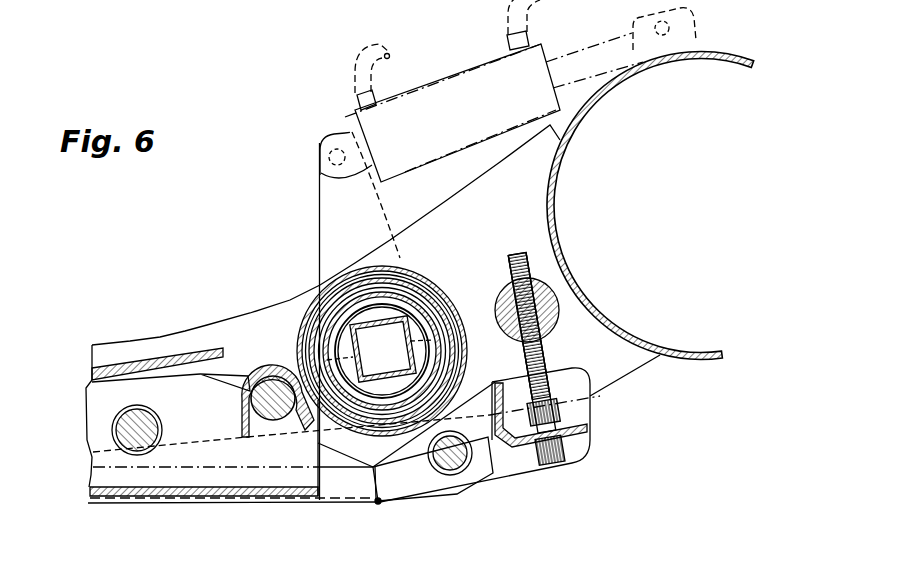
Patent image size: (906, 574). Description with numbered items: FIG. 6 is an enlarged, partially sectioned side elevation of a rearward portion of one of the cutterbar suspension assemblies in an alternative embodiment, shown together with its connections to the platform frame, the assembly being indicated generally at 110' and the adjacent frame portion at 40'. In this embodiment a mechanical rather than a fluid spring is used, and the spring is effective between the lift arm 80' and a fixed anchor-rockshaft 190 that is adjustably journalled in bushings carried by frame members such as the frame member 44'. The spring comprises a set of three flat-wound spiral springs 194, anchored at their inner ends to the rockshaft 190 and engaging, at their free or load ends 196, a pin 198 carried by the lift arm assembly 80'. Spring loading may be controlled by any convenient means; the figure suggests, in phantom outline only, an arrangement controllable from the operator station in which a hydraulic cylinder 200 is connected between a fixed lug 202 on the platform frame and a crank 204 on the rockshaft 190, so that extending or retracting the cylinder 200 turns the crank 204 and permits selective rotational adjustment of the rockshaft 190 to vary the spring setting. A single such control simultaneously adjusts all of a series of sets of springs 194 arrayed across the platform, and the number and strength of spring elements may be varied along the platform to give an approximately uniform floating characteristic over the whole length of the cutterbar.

The ring 40' is at (650, 229).
The frame member 44' is at (326, 252).
The lift arm 80' is at (205, 441).
The assembly 110' is at (156, 342).
The anchor-rockshaft 190 is at (383, 325).
The flat-wound spiral springs 194 is at (321, 289).
The free or load ends 196 is at (282, 340).
The pin 198 is at (268, 421).
The hydraulic cylinder 200 is at (458, 152).
The fixed lug 202 is at (697, 27).
The crank 204 is at (318, 218).